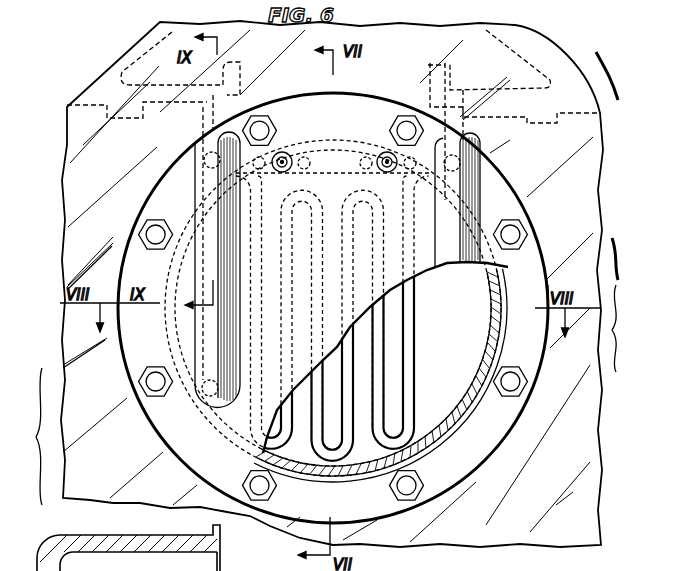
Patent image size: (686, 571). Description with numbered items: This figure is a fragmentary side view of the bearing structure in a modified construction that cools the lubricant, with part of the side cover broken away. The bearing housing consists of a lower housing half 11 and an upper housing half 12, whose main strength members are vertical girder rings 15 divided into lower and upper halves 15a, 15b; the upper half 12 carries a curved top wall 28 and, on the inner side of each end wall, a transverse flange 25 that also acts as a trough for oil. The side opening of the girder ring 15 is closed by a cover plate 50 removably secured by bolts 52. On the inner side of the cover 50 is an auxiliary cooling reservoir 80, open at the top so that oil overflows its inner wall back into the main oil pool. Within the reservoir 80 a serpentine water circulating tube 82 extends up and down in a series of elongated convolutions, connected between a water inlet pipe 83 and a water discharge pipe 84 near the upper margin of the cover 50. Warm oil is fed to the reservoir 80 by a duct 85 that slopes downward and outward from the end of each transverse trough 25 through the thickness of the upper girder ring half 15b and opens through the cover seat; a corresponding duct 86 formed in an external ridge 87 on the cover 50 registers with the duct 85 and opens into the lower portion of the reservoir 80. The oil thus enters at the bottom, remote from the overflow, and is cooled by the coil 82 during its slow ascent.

The lower housing half 11 is at (36, 437).
The upper housing half 12 is at (604, 113).
The girder ring 15 is at (627, 328).
The lower girder ring half 15a is at (84, 356).
The upper girder ring half 15b is at (88, 263).
The transverse flange 25 is at (335, 115).
The top wall 28 is at (117, 535).
The cover plate 50 is at (170, 428).
The bolts 52 is at (526, 227).
The auxiliary cooling reservoir 80 is at (320, 407).
The serpentine water circulating tube 82 is at (350, 387).
The water inlet pipe 83 is at (285, 151).
The water discharge pipe 84 is at (383, 150).
The duct 85 is at (207, 122).
The duct 86 is at (455, 257).
The external ridge 87 is at (195, 201).